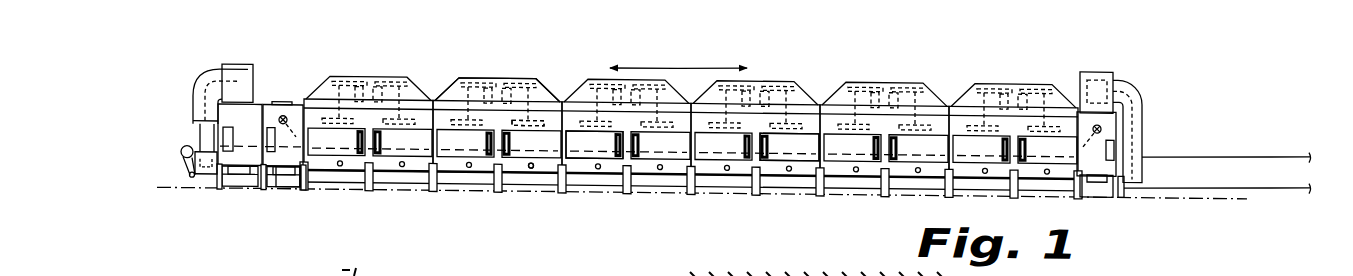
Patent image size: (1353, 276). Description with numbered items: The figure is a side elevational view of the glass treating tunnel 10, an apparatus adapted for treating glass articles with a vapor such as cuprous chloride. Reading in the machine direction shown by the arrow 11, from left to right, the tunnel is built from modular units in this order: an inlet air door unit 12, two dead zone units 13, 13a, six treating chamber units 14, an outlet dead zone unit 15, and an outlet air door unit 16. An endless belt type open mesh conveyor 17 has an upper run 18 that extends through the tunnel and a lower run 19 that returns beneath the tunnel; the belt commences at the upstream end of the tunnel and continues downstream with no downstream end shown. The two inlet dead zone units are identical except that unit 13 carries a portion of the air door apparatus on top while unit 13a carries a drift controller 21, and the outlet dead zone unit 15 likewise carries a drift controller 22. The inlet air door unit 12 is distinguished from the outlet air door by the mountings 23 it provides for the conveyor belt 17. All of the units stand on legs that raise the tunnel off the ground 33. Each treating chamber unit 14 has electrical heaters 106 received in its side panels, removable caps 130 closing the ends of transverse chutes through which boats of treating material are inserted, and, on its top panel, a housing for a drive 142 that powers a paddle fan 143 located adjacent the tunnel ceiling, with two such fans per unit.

The glass treating tunnel 10 is at (813, 36).
The arrow 11 is at (690, 66).
The inlet air door unit 12 is at (205, 189).
The dead zone unit 13 is at (245, 189).
The dead zone unit 13a is at (288, 189).
The treating chamber units 14 is at (477, 200).
The outlet dead zone unit 15 is at (1098, 190).
The outlet air door unit 16 is at (1135, 189).
The endless belt type open mesh conveyor 17 is at (1199, 145).
The upper run 18 is at (802, 146).
The lower run 19 is at (775, 183).
The drift controller 21 is at (284, 116).
The drift controller 22 is at (1101, 117).
The mountings 23 is at (177, 158).
The ground 33 is at (612, 192).
The electrical heaters 106 is at (593, 156).
The removable caps 130 is at (534, 168).
The drive 142 is at (481, 79).
The paddle fan 143 is at (549, 109).